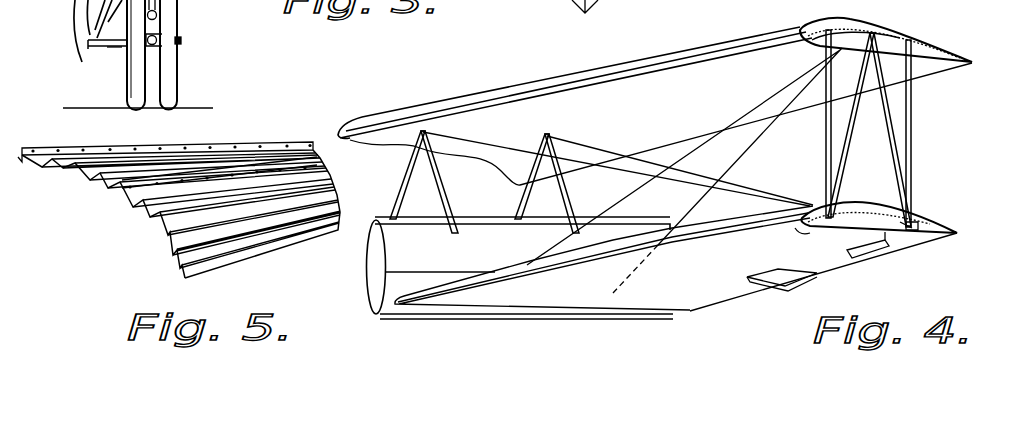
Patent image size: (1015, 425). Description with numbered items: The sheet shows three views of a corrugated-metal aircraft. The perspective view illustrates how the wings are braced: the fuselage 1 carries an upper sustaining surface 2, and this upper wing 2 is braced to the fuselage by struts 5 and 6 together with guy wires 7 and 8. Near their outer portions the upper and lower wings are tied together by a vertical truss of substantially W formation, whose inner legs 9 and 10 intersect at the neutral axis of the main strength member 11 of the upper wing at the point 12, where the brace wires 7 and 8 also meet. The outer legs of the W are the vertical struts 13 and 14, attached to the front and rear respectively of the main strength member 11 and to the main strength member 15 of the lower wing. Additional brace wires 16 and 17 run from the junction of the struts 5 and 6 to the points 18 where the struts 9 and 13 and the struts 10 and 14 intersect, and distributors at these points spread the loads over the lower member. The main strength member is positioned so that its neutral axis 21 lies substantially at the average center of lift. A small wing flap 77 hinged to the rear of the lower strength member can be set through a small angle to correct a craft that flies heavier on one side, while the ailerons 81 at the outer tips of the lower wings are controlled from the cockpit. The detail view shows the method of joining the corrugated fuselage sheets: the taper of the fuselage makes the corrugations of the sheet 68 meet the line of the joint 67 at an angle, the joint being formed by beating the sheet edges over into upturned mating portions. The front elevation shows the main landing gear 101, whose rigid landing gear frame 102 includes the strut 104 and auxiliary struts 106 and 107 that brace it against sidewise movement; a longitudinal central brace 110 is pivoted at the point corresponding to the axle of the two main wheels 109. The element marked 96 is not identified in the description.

In FIG. 4, the fuselage 1 is at (386, 322).
In FIG. 4, the upper sustaining surface 2 is at (668, 62).
In FIG. 4, the strut 5 is at (404, 185).
In FIG. 4, the strut 6 is at (443, 202).
In FIG. 4, the guy wire 7 is at (700, 162).
In FIG. 4, the guy wire 8 is at (750, 167).
In FIG. 4, the inner leg of W truss 9 is at (847, 140).
In FIG. 4, the inner leg of W truss 10 is at (883, 163).
In FIG. 4, the main strength member of upper wing 11 is at (935, 42).
In FIG. 4, the intersection point 12 is at (897, 25).
In FIG. 4, the vertical strut 13 is at (820, 137).
In FIG. 4, the vertical strut 14 is at (913, 153).
In FIG. 4, the main strength member of lower wing 15 is at (905, 202).
In FIG. 4, the brace wire 16 is at (578, 152).
In FIG. 4, the brace wire 17 is at (632, 141).
In FIG. 4, the intersection points 18 is at (920, 217).
In FIG. 4, the neutral axis point 21 is at (865, 22).
In FIG. 4, the wing flap 77 is at (790, 279).
In FIG. 4, the ailerons 81 is at (933, 247).
In FIG. 5, the joint 67 is at (266, 146).
In FIG. 5, the corrugated sheet 68 is at (153, 227).
In FIG. 3, the lever 96 is at (544, 8).
In FIG. 3, the main landing gear 101 is at (158, 15).
In FIG. 3, the rigid landing gear frame 102 is at (181, 40).
In FIG. 3, the strut 104 is at (60, 0).
In FIG. 3, the auxiliary strut 106 is at (107, 47).
In FIG. 3, the auxiliary strut 107 is at (120, 47).
In FIG. 3, the main wheels 109 is at (150, 85).
In FIG. 3, the longitudinal central brace 110 is at (158, 50).